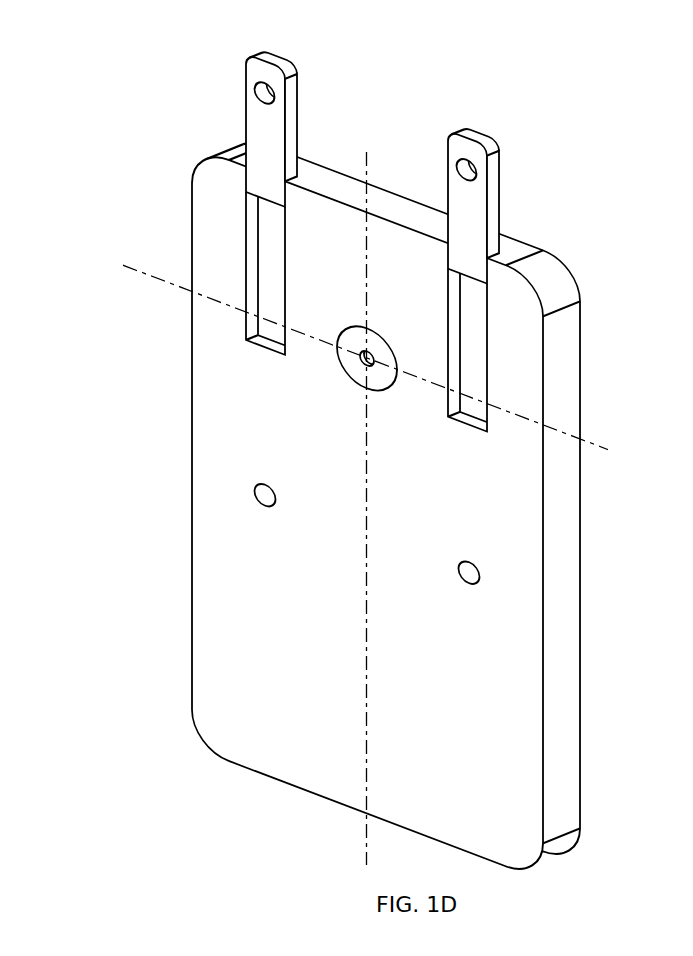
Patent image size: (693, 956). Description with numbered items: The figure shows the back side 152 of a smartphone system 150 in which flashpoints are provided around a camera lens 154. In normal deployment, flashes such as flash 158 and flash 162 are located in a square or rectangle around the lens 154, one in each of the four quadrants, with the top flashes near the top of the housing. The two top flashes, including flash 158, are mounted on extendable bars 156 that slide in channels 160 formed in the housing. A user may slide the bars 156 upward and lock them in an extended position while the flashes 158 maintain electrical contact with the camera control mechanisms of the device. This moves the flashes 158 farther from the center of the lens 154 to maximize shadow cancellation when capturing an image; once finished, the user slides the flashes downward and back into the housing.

The smartphone system 150 is at (567, 170).
The back side 152 is at (490, 520).
The lens 154 is at (341, 361).
The extendable bars 156 is at (458, 199).
The flash 158 is at (457, 168).
The channels 160 is at (480, 377).
The flash 162 is at (481, 572).